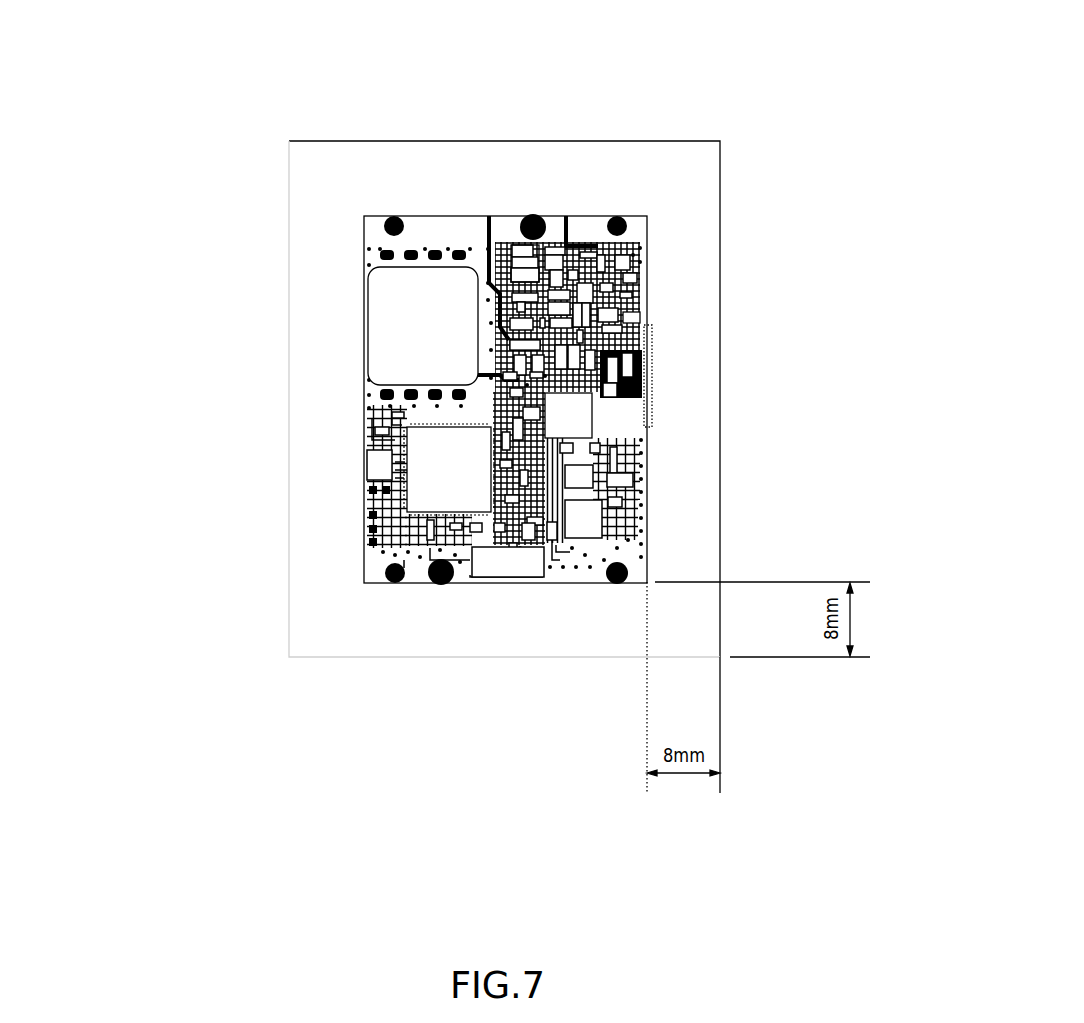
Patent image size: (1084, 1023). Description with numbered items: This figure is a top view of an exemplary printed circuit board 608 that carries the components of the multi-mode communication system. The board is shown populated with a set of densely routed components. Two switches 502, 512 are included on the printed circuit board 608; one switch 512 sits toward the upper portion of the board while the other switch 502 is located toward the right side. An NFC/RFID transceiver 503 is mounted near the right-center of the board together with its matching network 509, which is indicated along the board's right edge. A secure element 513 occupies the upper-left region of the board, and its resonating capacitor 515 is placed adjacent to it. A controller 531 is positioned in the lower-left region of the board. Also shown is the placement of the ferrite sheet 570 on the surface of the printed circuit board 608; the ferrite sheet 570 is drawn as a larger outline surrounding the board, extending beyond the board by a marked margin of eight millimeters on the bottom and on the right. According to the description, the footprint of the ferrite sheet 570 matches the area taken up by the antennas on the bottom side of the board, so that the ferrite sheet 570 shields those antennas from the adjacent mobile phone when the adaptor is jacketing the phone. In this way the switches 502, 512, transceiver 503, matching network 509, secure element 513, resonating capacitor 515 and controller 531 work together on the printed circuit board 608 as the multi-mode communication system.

The printed circuit board 608 is at (341, 127).
The ferrite sheet 570 is at (550, 162).
The switch 512 is at (510, 263).
The secure element 513 is at (380, 323).
The resonating capacitor 515 is at (507, 353).
The controller 531 is at (432, 493).
The switch 502 is at (633, 320).
The matching network 509 is at (653, 378).
The NFC/RFID transceiver 503 is at (578, 428).